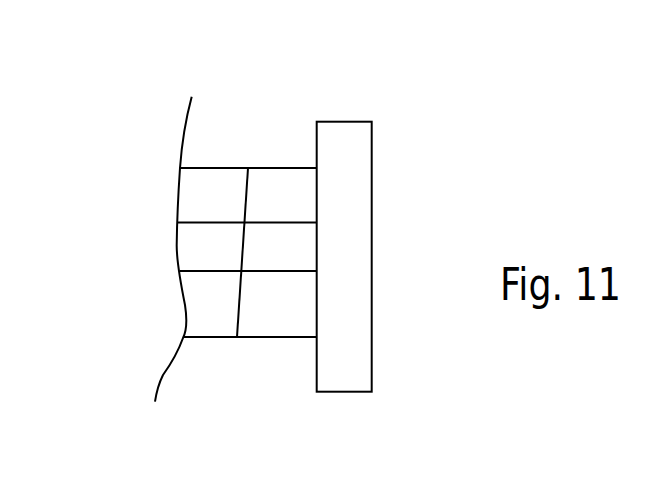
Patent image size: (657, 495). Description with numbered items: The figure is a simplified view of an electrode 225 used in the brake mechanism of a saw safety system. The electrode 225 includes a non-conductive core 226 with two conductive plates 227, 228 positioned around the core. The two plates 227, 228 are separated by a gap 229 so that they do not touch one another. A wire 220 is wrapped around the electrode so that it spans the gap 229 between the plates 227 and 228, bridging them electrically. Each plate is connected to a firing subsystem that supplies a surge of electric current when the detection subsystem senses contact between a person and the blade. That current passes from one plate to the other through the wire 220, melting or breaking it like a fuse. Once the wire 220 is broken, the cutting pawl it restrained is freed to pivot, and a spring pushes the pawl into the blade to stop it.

The wire 220 is at (247, 198).
The electrode 225 is at (437, 150).
The non-conductive core 226 is at (346, 362).
The conductive plate 227 is at (285, 183).
The conductive plate 228 is at (210, 315).
The gap 229 is at (158, 249).